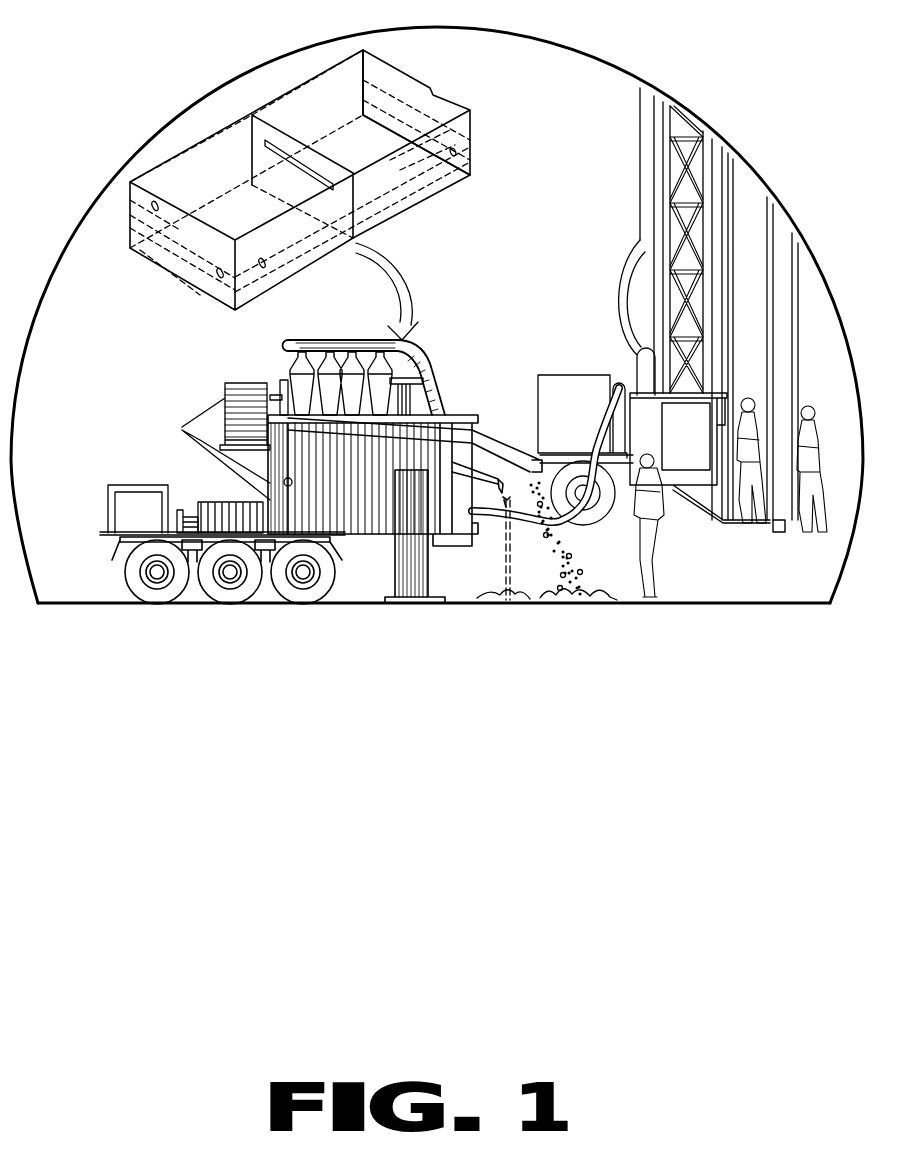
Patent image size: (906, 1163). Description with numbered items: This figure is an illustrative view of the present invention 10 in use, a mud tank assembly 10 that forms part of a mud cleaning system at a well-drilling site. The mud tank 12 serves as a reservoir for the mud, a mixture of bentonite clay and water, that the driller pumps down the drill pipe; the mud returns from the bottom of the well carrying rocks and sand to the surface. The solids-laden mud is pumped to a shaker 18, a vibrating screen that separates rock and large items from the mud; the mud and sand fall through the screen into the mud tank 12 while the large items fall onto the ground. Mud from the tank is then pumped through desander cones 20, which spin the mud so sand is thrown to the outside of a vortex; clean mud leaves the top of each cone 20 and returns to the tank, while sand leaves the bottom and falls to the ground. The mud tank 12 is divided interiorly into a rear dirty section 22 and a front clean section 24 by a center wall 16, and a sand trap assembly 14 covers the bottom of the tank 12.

The mud tank assembly 10 is at (476, 340).
The mud tank 12 is at (472, 133).
The sand trap assembly 14 is at (452, 246).
The center wall 16 is at (270, 120).
The shaker 18 is at (458, 402).
The desander cones 20 is at (363, 357).
The rear dirty section 22 is at (348, 88).
The front clean section 24 is at (247, 197).